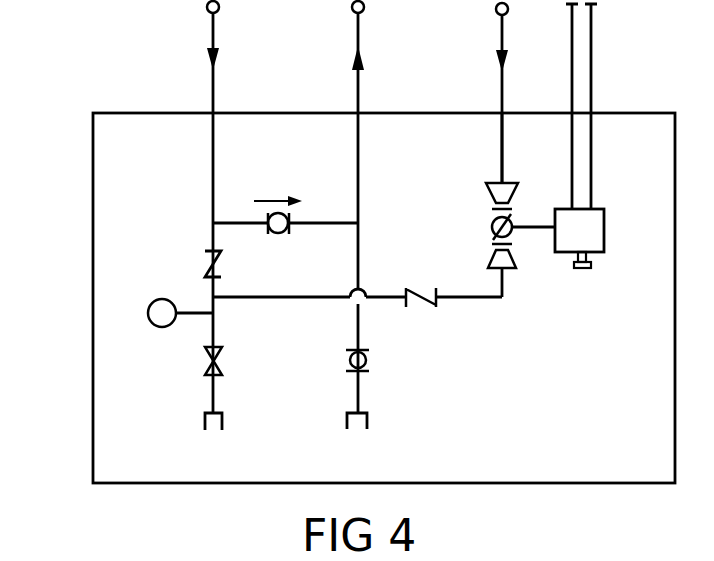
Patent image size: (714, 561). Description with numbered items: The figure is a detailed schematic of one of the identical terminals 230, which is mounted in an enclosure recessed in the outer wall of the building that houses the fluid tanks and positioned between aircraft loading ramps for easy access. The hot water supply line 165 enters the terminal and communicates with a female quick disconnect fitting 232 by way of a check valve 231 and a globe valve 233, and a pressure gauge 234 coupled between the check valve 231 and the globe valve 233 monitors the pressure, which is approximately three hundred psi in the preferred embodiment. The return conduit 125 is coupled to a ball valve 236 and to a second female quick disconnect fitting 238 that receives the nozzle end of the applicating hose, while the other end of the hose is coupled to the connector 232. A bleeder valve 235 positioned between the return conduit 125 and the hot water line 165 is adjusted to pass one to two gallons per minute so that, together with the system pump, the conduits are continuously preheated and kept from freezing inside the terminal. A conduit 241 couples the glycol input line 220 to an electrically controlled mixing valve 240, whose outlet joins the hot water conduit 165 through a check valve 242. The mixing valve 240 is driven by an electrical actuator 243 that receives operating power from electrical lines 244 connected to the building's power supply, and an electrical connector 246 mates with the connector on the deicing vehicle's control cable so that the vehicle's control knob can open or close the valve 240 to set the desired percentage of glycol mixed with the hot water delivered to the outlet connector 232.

The return conduit 125 is at (362, 86).
The hot water supply line 165 is at (216, 86).
The glycol input line 220 is at (496, 28).
The terminal 230 is at (93, 388).
The check valve 231 is at (205, 262).
The female quick disconnect fitting 232 is at (224, 418).
The globe valve 233 is at (224, 360).
The pressure gauge 234 is at (158, 327).
The bleeder valve 235 is at (278, 236).
The ball valve 236 is at (368, 361).
The second female quick disconnect fitting 238 is at (370, 412).
The electrically controlled mixing valve 240 is at (514, 250).
The conduit 241 is at (504, 146).
The check valve 242 is at (420, 298).
The electrical actuator 243 is at (605, 213).
The electrical lines 244 is at (575, 48).
The electrical connector 246 is at (592, 265).